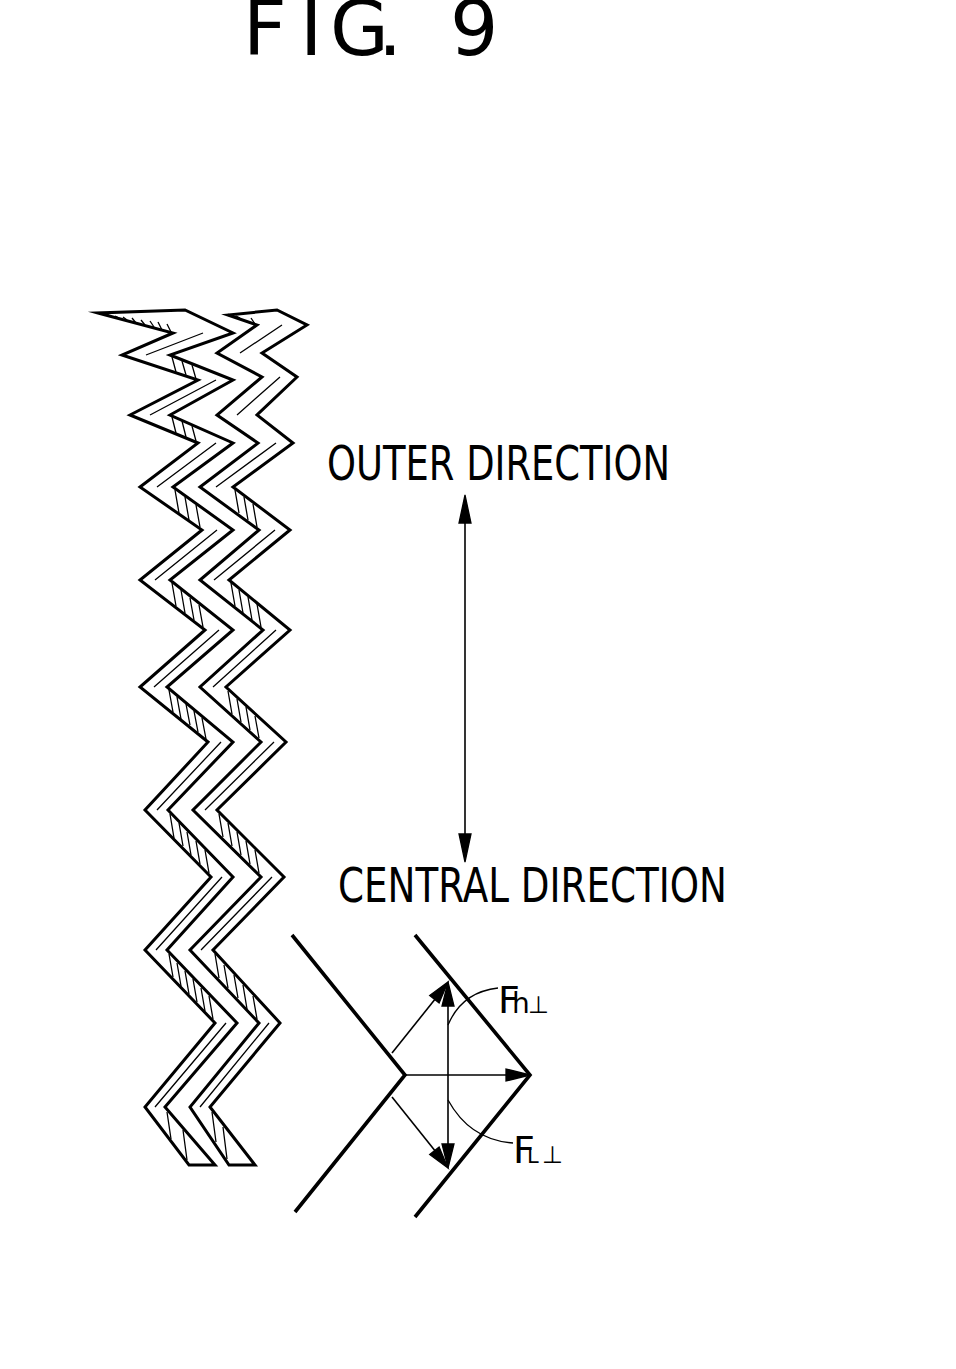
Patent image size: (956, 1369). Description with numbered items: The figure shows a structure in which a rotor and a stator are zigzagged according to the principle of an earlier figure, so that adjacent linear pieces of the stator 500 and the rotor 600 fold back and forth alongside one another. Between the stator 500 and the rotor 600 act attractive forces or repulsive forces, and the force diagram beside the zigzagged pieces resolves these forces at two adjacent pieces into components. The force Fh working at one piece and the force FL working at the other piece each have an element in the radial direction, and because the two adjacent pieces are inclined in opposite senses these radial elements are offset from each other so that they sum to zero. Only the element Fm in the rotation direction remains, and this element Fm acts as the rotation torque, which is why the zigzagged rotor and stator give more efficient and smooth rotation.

The stator 500 is at (188, 1165).
The rotor 600 is at (255, 1165).
The rotation-direction force element Fm is at (467, 1056).
The force element at one adjacent piece Fh is at (417, 1015).
The force element at the other adjacent piece FL is at (417, 1143).